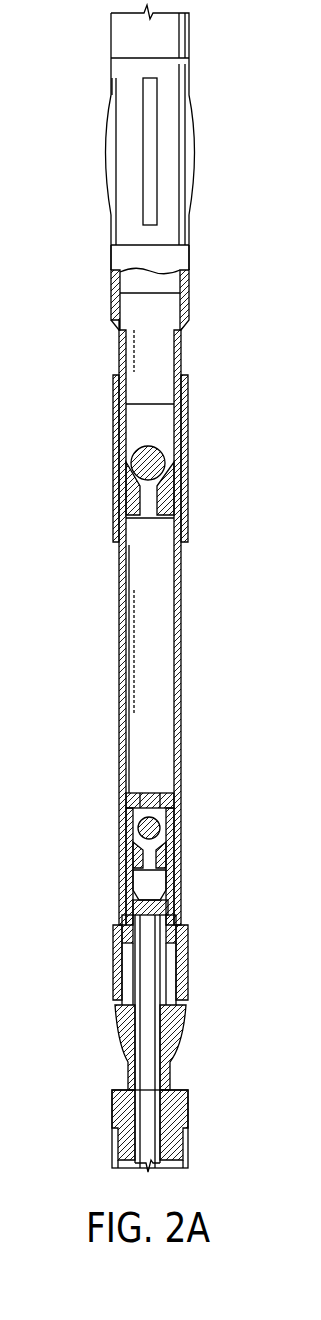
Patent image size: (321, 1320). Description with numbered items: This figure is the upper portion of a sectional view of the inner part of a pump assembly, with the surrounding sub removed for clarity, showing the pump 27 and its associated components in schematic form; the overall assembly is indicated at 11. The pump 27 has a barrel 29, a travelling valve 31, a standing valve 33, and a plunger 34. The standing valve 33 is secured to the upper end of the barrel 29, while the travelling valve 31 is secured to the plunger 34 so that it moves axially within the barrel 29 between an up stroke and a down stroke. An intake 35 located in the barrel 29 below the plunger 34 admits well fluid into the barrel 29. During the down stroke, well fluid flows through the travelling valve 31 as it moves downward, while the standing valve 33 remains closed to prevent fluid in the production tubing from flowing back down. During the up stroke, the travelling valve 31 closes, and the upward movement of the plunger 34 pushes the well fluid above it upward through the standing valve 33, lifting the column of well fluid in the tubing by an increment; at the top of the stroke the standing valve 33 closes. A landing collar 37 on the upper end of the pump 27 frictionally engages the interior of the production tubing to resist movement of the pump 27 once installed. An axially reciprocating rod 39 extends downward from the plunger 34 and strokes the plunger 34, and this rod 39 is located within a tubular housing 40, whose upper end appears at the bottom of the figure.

The downhole tool assembly 11 is at (84, 381).
The pump 27 is at (114, 588).
The barrel 29 is at (181, 690).
The travelling valve 31 is at (180, 822).
The standing valve 33 is at (186, 482).
The plunger 34 is at (120, 848).
The intake 35 is at (122, 1040).
The landing collar 37 is at (106, 152).
The reciprocating rod 39 is at (135, 990).
The tubular housing 40 is at (185, 1146).